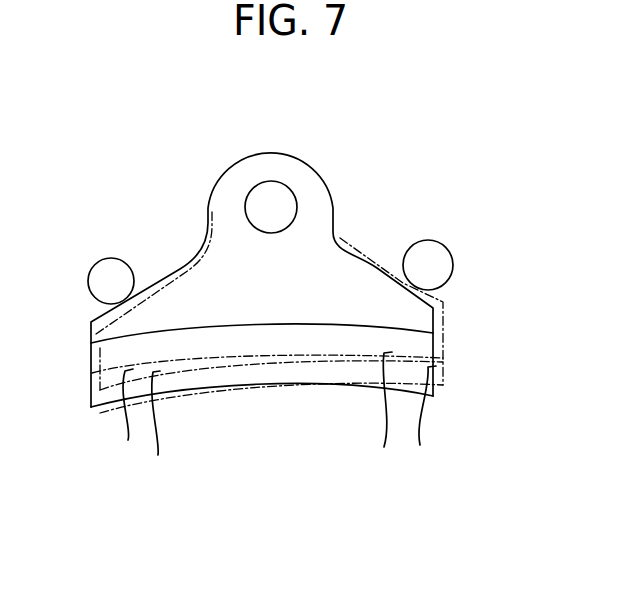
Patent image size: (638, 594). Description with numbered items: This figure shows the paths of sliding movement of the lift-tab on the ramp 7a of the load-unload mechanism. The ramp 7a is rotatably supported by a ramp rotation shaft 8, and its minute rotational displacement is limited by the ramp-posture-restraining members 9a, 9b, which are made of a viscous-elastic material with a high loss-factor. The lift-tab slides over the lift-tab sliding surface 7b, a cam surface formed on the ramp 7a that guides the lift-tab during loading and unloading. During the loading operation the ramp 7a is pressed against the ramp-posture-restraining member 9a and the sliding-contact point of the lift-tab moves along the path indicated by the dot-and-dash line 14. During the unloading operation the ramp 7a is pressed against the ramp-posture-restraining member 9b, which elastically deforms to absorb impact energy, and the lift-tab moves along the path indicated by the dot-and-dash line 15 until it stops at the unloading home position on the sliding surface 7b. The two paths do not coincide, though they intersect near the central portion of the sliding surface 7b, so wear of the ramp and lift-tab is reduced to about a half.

The ramp 7a is at (318, 167).
The lift-tab sliding surface 7b is at (297, 365).
The ramp rotation shaft 8 is at (248, 192).
The ramp-posture-restraining member 9a is at (106, 258).
The ramp-posture-restraining member 9b is at (440, 247).
The sliding movement path (dot-and-dash line) 14 is at (128, 440).
The sliding movement path (dot-and-dash line) 15 is at (158, 455).